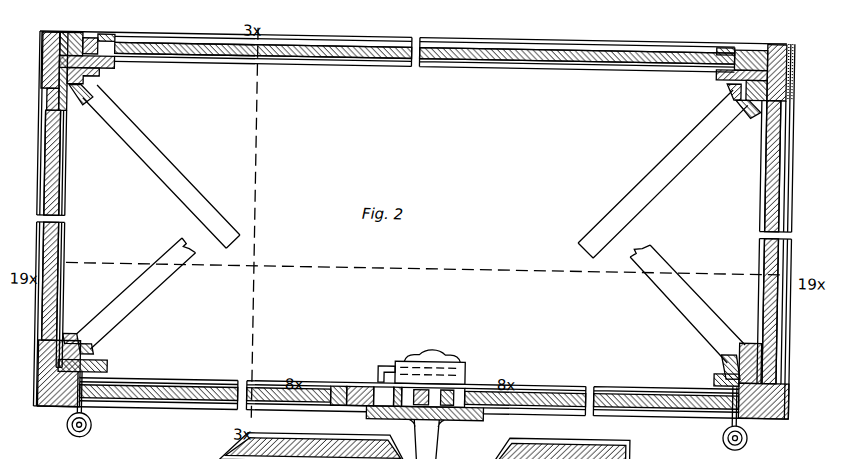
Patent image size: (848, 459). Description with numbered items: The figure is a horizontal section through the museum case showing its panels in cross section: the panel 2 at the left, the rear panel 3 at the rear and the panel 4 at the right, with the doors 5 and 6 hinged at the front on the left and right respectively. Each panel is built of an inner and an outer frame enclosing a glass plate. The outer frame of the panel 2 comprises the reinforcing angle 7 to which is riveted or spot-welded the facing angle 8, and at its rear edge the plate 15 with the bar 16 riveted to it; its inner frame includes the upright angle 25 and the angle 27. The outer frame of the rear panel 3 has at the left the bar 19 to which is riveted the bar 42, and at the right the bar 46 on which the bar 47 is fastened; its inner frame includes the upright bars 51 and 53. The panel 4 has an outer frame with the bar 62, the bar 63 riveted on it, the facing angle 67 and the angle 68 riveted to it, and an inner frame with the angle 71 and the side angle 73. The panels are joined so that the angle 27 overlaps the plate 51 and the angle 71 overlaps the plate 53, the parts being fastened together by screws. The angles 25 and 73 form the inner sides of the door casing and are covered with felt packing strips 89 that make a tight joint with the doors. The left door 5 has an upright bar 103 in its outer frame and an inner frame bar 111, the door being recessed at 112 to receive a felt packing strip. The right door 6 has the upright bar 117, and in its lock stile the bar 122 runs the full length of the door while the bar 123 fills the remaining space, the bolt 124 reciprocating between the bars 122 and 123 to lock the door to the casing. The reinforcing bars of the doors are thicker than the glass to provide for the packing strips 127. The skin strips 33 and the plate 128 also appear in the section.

The plate 15 is at (43, 44).
The bar 16 is at (46, 64).
The bar 42 is at (88, 40).
The bar 19 is at (104, 39).
The sheet metal skin 33 is at (120, 40).
The rear panel 3 is at (490, 56).
The bar 46 is at (749, 40).
The bar 47 is at (778, 40).
The bar 63 is at (792, 58).
The bar 62 is at (795, 80).
The bar 51 is at (116, 66).
The upright bar 53 is at (722, 67).
The angle 27 is at (68, 106).
The angle 71 is at (756, 108).
The panel 4 is at (776, 196).
The panel 2 is at (60, 243).
The upright angle 25 is at (74, 328).
The side angle 73 is at (756, 345).
The felt packing strips 89 is at (100, 365).
The door 5 is at (196, 386).
The door 6 is at (610, 390).
The bar 111 is at (345, 383).
The recess 112 is at (363, 382).
The bar 123 is at (421, 352).
The bolt 124 is at (432, 372).
The bar 122 is at (468, 376).
The facing angle 8 is at (60, 400).
The facing angle 67 is at (790, 407).
The reinforcing angle 7 is at (76, 428).
The angle 68 is at (748, 417).
The packing strips 127 is at (168, 403).
The upright bar 103 is at (425, 442).
The base plate 128 is at (400, 414).
The upright bar 117 is at (444, 439).